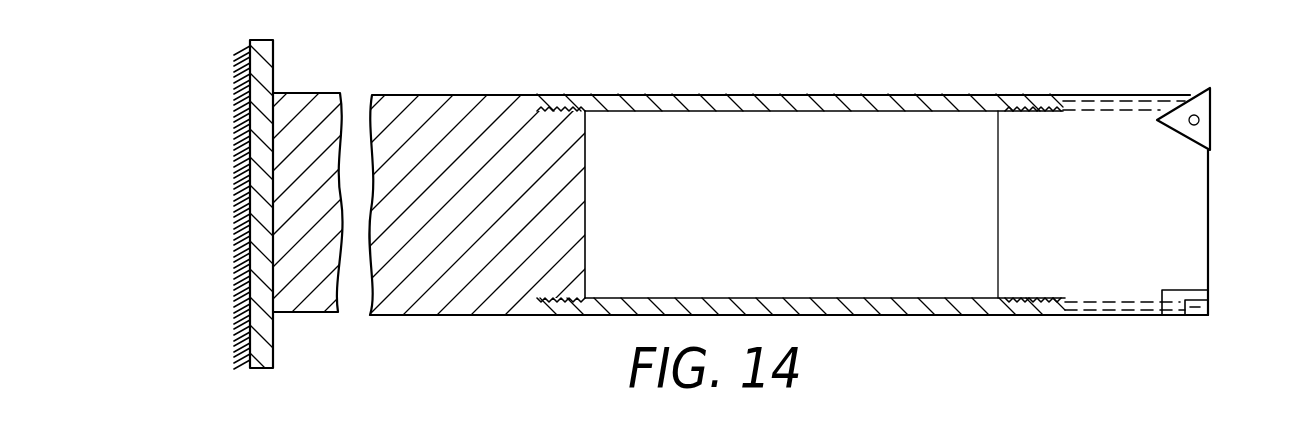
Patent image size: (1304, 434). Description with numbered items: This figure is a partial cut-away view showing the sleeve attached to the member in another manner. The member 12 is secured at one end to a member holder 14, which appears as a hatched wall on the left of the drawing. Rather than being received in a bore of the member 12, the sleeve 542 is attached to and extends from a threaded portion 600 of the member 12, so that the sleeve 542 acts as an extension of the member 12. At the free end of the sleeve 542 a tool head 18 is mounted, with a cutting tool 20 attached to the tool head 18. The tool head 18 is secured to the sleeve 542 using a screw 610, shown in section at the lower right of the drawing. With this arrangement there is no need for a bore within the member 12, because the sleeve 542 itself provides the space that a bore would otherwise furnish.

The member holder 14 is at (267, 40).
The member 12 is at (309, 93).
The threaded portion 600 is at (560, 165).
The sleeve 542 is at (872, 100).
The cutting tool 20 is at (1212, 98).
The tool head 18 is at (1210, 225).
The screw 610 is at (1178, 290).